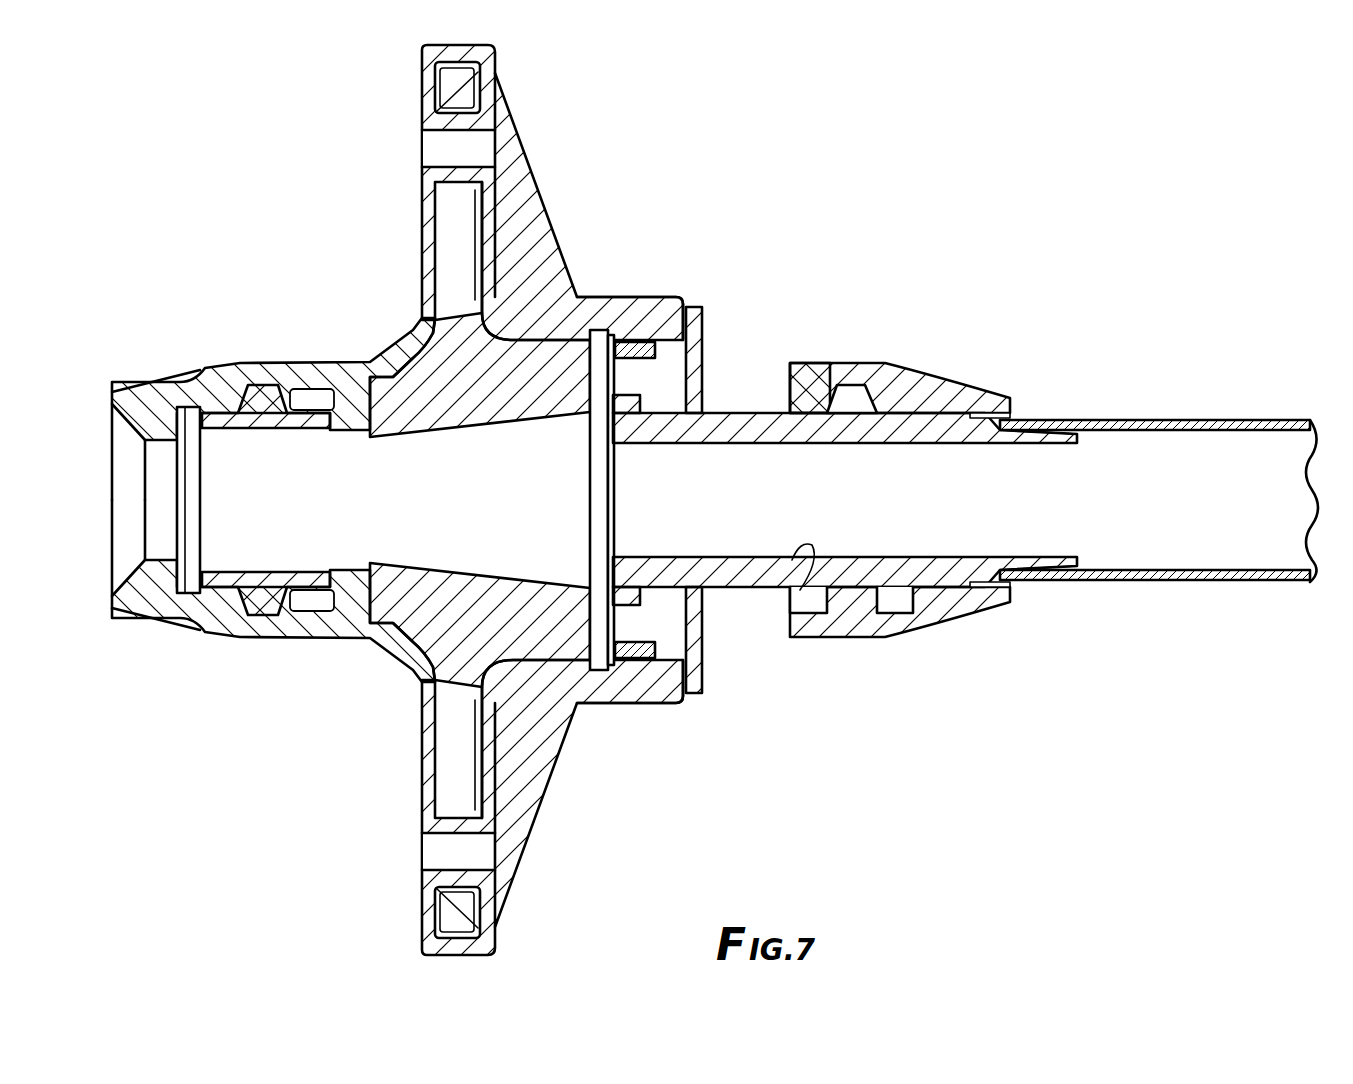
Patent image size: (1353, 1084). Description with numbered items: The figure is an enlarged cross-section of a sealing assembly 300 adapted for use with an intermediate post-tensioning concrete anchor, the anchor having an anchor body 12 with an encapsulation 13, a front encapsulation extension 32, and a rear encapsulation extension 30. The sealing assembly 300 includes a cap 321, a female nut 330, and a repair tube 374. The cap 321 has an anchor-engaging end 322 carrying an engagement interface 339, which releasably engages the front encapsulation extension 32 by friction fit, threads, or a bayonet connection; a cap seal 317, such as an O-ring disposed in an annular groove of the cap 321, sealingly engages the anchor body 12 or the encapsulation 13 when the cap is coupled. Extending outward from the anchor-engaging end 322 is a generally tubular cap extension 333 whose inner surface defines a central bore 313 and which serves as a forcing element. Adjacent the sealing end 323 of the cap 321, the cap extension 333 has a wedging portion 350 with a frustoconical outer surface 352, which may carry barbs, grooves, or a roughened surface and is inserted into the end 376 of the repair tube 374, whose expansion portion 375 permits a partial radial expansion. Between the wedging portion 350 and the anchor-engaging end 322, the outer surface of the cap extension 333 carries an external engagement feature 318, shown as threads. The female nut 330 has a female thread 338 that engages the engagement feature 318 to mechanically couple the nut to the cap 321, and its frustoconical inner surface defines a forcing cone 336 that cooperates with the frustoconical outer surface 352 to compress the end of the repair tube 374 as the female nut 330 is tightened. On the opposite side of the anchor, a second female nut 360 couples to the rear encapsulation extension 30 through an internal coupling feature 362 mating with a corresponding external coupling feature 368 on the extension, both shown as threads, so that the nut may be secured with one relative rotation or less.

The anchor body 12 is at (440, 345).
The encapsulation 13 is at (413, 237).
The rear encapsulation extension 30 is at (302, 388).
The front encapsulation extension 32 is at (580, 298).
The sealing assembly 300 is at (994, 242).
The central bore 313 is at (832, 612).
The cap seal 317 is at (660, 680).
The external engagement feature 318 is at (818, 395).
The cap 321 is at (735, 412).
The anchor-engaging end 322 is at (600, 670).
The sealing end 323 is at (1042, 432).
The female nut 330 is at (940, 376).
The cap extension 333 is at (766, 592).
The forcing cone 336 is at (917, 585).
The female thread 338 is at (852, 388).
The engagement interface 339 is at (690, 668).
The wedging portion 350 is at (976, 588).
The frustoconical outer surface 352 is at (1056, 570).
The second female nut 360 is at (205, 380).
The internal coupling feature 362 is at (268, 614).
The external coupling feature 368 is at (240, 382).
The repair tube 374 is at (1155, 420).
The expansion portion 375 is at (1010, 416).
The end 376 is at (1150, 582).